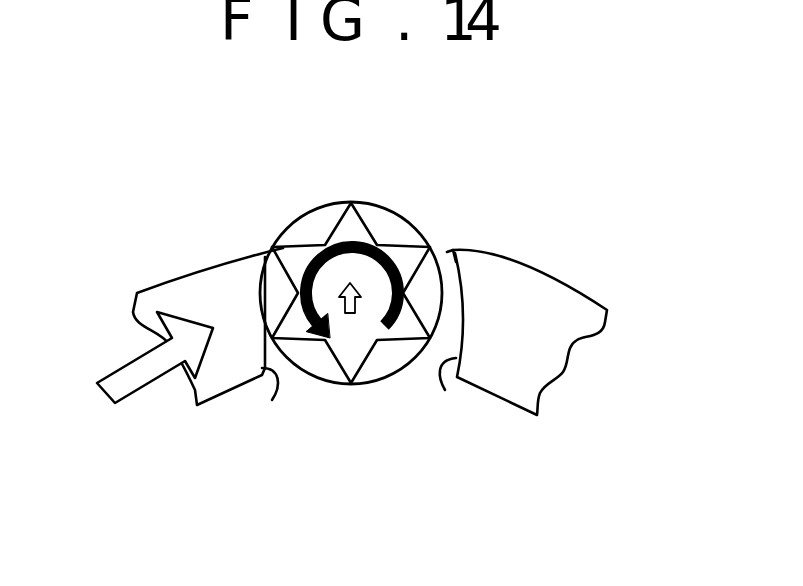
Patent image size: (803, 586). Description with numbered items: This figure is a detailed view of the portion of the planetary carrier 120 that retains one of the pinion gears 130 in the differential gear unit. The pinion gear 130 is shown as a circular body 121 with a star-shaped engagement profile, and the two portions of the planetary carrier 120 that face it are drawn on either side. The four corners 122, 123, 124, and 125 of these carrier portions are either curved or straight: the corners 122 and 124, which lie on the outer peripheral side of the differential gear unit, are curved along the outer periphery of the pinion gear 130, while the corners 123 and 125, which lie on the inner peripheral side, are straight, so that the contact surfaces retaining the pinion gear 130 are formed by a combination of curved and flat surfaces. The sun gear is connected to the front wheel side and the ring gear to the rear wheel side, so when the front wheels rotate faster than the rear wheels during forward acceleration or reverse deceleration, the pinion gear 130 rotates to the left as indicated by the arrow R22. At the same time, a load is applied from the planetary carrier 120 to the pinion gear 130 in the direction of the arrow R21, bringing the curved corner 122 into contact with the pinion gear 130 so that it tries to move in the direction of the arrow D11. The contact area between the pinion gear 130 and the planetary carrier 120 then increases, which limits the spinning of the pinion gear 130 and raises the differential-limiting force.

The planetary carrier 120 is at (517, 290).
The rotary body 121 is at (319, 404).
The corner 122 is at (287, 266).
The corner 123 is at (272, 400).
The corner 124 is at (447, 252).
The corner 125 is at (445, 390).
The pinion gear 130 is at (348, 355).
The arrow R21 is at (125, 360).
The arrow R22 is at (351, 243).
The arrow D11 is at (358, 308).